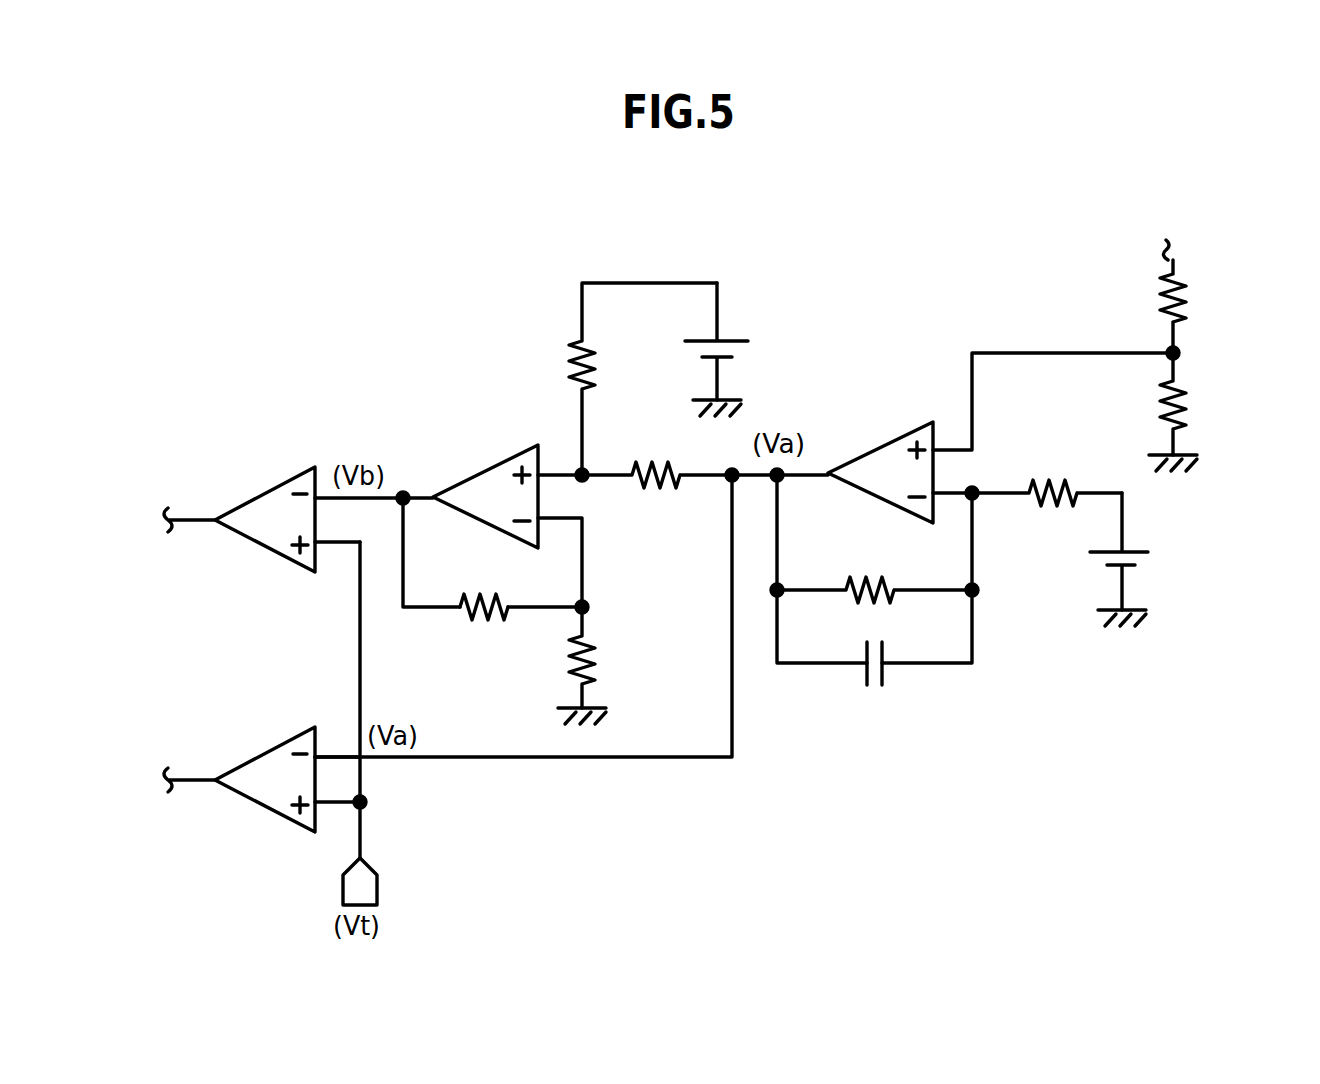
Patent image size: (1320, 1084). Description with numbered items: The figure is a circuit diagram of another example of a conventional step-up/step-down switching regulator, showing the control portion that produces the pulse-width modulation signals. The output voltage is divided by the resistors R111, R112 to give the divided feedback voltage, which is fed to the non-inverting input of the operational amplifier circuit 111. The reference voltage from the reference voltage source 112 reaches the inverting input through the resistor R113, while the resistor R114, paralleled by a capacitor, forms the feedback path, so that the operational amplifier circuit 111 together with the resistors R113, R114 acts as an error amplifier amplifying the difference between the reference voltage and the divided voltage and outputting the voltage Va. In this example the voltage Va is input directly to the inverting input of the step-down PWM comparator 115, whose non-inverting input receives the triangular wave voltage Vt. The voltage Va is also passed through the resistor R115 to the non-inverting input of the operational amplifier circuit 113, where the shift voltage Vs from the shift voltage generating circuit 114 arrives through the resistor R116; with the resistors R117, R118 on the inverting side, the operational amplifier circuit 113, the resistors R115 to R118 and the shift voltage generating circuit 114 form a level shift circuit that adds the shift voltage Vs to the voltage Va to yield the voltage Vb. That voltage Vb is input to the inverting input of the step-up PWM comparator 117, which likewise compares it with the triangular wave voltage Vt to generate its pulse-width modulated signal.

The operational amplifier circuit 111 is at (901, 436).
The reference voltage source 112 is at (1148, 558).
The operational amplifier circuit 113 is at (485, 465).
The shift voltage generating circuit 114 is at (740, 349).
The step-down PWM comparator 115 is at (255, 754).
The step-up PWM comparator 117 is at (254, 495).
The resistor R111 is at (1210, 296).
The resistor R112 is at (1204, 412).
The resistor R113 is at (1047, 475).
The resistor R114 is at (874, 571).
The resistor R115 is at (657, 457).
The resistor R116 is at (643, 379).
The resistor R117 is at (613, 665).
The resistor R118 is at (485, 590).